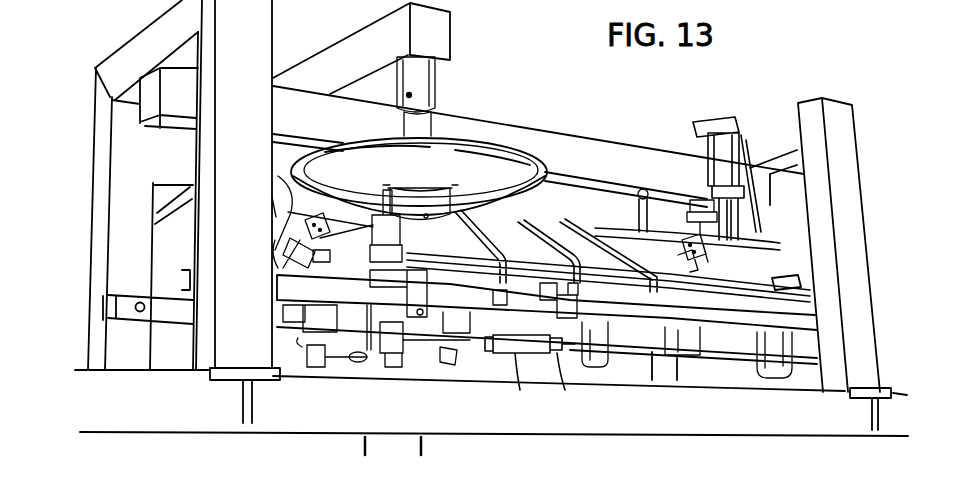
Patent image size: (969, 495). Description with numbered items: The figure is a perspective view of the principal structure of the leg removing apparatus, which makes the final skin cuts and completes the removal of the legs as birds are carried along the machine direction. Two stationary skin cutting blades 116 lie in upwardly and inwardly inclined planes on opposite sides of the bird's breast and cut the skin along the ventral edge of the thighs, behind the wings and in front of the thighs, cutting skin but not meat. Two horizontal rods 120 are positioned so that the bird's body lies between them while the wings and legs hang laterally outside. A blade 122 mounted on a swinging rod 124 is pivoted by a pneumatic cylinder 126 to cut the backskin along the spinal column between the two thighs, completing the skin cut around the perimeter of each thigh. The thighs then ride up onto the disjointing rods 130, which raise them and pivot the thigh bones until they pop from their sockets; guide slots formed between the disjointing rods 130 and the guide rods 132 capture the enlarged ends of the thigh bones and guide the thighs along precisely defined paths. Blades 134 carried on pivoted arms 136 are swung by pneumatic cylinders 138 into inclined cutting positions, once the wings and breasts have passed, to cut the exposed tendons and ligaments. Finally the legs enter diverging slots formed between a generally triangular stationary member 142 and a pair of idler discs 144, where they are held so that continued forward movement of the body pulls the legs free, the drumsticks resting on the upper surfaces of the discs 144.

The stationary skin cutting blades 116 is at (782, 281).
The horizontal rods 120 is at (537, 268).
The blade 122 is at (692, 258).
The swinging rod 124 is at (688, 228).
The pneumatic cylinder 126 is at (698, 147).
The disjointing rods 130 is at (590, 222).
The guide rods 132 is at (619, 218).
The blades 134 is at (287, 212).
The pivoted arms 136 is at (280, 267).
The pneumatic cylinders 138 is at (525, 343).
The generally triangular stationary member 142 is at (297, 183).
The idler discs 144 is at (488, 148).